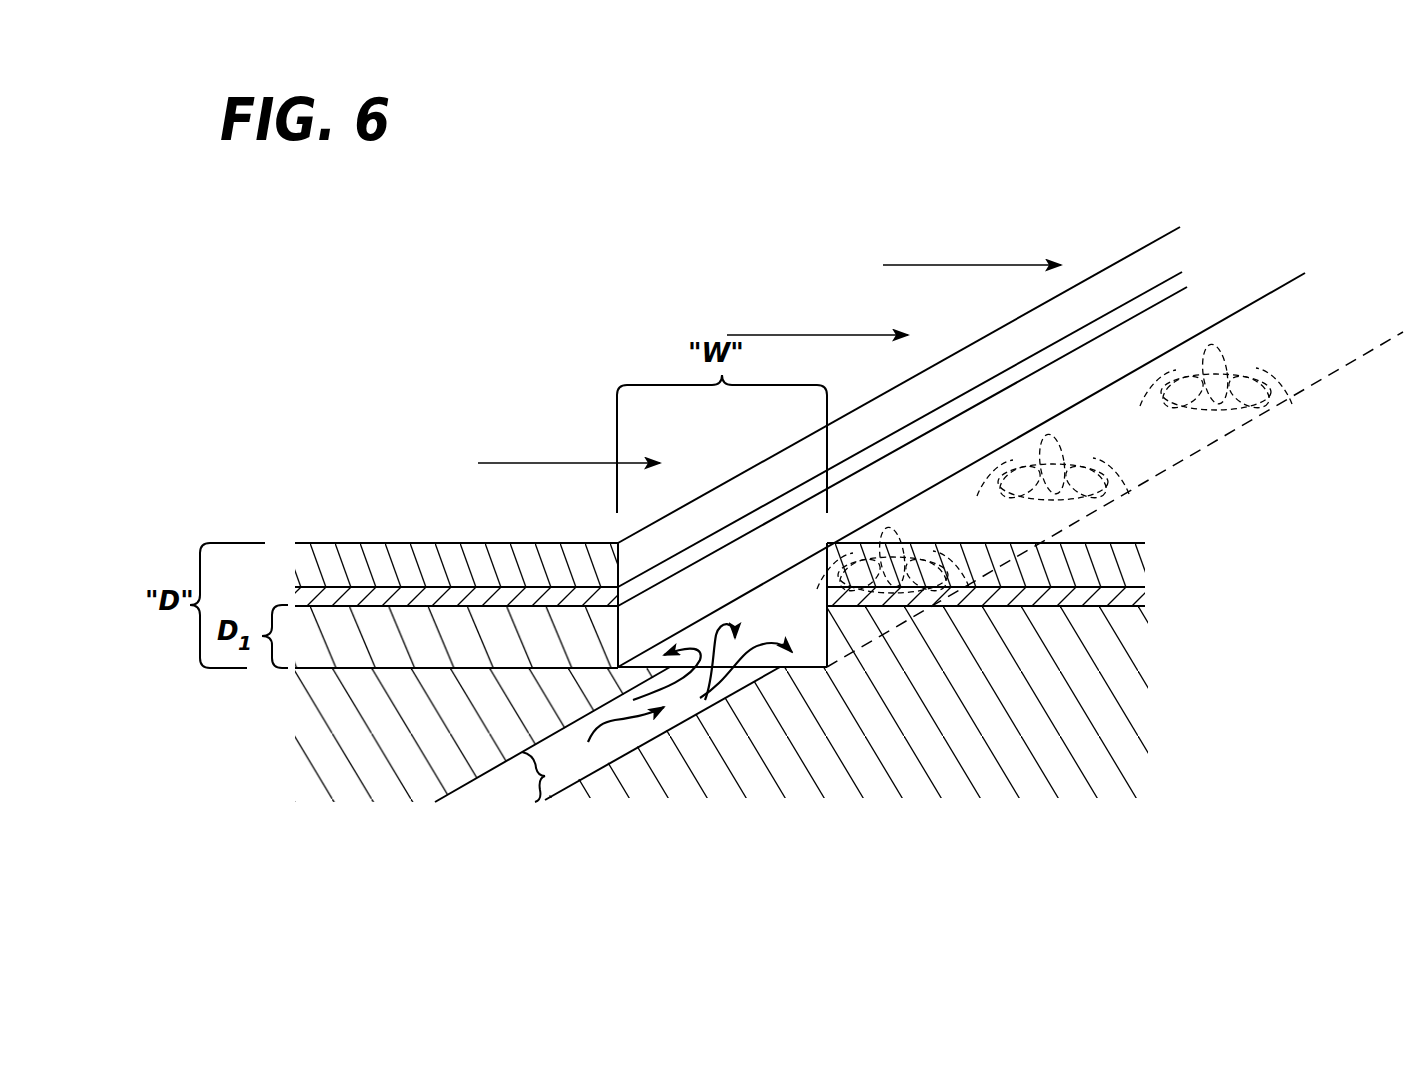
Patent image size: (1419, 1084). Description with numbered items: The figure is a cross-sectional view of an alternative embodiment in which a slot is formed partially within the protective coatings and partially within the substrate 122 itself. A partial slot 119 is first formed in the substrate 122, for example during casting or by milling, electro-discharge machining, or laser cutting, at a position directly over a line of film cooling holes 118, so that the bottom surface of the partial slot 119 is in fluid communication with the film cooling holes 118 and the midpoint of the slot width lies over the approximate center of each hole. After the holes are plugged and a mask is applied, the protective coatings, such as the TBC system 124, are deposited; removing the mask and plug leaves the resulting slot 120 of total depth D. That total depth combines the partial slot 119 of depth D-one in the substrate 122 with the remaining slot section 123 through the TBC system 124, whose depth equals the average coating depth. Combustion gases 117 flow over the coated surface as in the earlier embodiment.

The combustion gases 117 is at (795, 335).
The film cooling holes 118 is at (1183, 407).
The partial slot 119 is at (652, 621).
The slot 120 is at (948, 343).
The substrate 122 is at (1110, 667).
The remaining slot section 123 is at (650, 553).
The TBC system 124 is at (1165, 543).